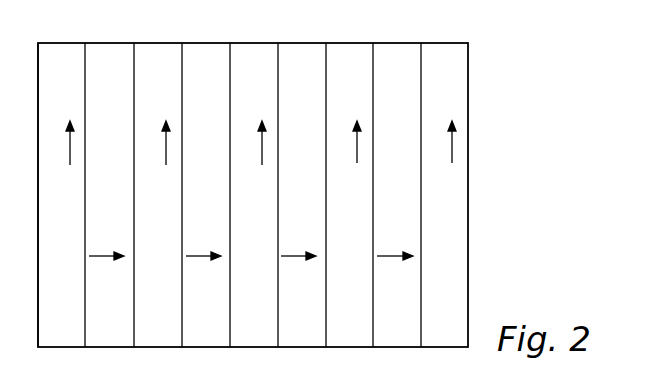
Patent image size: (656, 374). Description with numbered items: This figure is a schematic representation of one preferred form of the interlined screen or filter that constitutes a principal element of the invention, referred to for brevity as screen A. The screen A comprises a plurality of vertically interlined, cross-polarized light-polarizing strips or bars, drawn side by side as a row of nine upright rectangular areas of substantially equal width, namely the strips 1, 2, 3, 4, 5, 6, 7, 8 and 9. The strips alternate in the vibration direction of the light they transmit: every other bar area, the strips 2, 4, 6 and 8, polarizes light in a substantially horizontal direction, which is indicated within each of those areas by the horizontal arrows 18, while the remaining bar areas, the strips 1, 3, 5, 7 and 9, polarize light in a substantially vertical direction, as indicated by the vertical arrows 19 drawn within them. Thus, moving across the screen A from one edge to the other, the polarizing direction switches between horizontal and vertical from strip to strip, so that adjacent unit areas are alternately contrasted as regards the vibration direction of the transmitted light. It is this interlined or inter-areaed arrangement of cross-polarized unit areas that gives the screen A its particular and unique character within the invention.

The screen A is at (582, 120).
The light-polarizing strip 1 is at (60, 53).
The light-polarizing strip 2 is at (108, 50).
The light-polarizing strip 3 is at (157, 50).
The light-polarizing strip 4 is at (202, 52).
The light-polarizing strip 5 is at (254, 50).
The light-polarizing strip 6 is at (297, 50).
The light-polarizing strip 7 is at (350, 50).
The light-polarizing strip 8 is at (394, 50).
The light-polarizing strip 9 is at (442, 50).
The arrows 18 is at (105, 258).
The arrows 19 is at (64, 146).